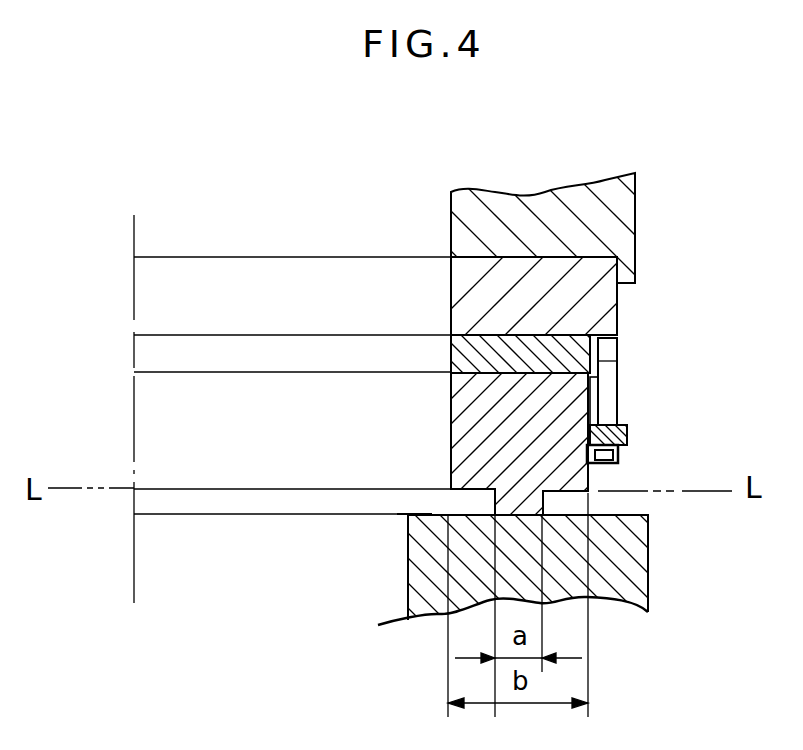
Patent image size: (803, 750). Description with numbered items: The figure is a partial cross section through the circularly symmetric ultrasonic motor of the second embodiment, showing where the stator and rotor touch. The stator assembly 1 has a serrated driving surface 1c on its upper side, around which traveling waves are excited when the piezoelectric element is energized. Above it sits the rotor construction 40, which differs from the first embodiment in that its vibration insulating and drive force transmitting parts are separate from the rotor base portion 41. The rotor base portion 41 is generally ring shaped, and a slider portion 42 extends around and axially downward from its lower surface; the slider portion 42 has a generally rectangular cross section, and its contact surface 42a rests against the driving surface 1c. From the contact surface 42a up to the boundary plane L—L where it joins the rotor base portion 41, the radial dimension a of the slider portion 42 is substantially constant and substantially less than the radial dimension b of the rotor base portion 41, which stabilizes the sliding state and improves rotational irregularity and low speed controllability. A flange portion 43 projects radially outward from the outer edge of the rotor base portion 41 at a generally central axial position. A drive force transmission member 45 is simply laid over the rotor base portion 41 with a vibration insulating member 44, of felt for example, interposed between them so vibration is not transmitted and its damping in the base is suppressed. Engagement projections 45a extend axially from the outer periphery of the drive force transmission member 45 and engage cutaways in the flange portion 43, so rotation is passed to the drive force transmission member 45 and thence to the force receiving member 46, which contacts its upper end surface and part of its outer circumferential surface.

The rotor construction 40 is at (420, 292).
The rotor base portion 41 is at (460, 448).
The slider portion 42 is at (548, 506).
The contact surface 42a is at (497, 552).
The flange portion 43 is at (627, 437).
The vibration insulating member 44 is at (598, 357).
The drive force transmission member 45 is at (597, 299).
The engagement projection 45a is at (606, 388).
The force receiving member 46 is at (636, 192).
The stator assembly 1 is at (632, 572).
The driving surface 1c is at (428, 514).